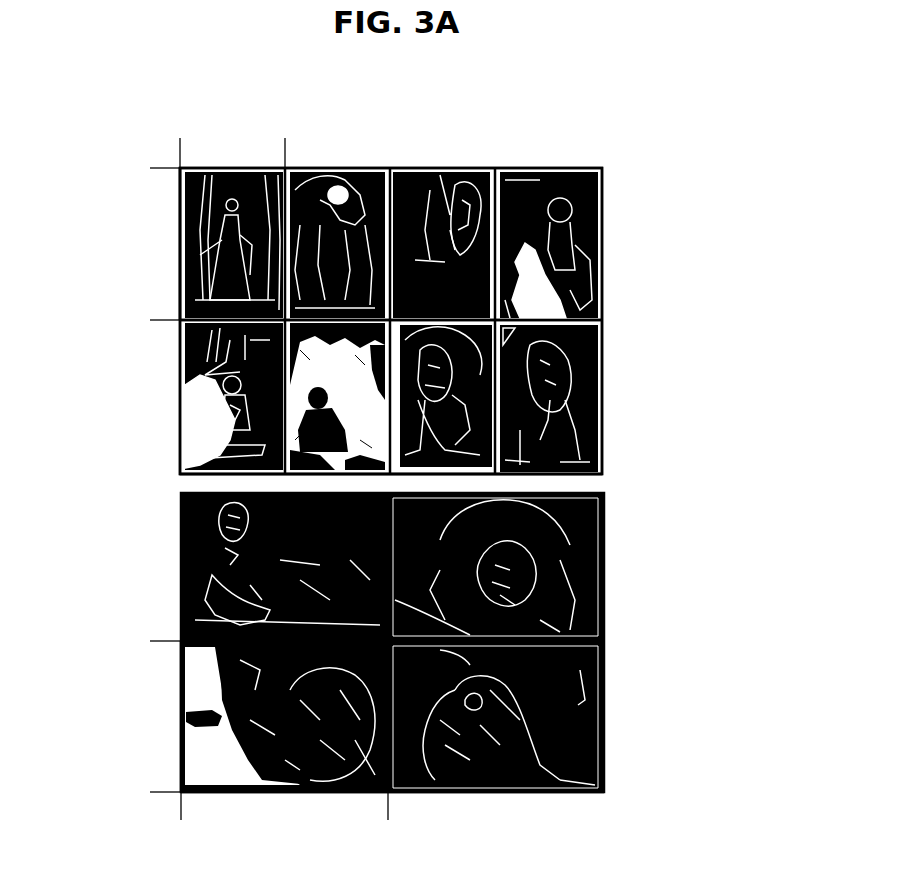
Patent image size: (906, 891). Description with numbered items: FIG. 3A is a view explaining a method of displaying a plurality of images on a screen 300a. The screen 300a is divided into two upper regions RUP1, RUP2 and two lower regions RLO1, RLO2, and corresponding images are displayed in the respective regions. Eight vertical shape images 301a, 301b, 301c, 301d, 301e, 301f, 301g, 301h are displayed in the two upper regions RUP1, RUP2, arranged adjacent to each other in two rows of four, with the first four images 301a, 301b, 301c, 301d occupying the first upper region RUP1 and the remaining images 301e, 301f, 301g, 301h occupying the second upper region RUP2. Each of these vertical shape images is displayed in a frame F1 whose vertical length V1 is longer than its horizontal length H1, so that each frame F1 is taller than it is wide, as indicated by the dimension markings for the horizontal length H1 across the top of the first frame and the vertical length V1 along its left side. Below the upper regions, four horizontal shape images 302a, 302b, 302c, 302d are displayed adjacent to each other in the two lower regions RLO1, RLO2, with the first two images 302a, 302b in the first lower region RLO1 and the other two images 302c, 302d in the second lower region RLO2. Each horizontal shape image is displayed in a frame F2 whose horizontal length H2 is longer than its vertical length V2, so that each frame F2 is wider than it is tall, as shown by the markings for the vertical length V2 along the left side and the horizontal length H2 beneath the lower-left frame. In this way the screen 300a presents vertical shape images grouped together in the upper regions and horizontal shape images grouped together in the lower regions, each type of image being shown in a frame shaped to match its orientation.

The screen 300a is at (432, 160).
The vertical shape image 301a is at (272, 168).
The vertical shape image 301b is at (340, 168).
The vertical shape image 301c is at (470, 168).
The vertical shape image 301d is at (543, 168).
The vertical shape image 301e is at (186, 351).
The vertical shape image 301f is at (320, 455).
The vertical shape image 301g is at (470, 345).
The vertical shape image 301h is at (600, 433).
The horizontal shape image 302a is at (183, 610).
The horizontal shape image 302b is at (600, 560).
The horizontal shape image 302c is at (217, 665).
The horizontal shape image 302d is at (600, 710).
The horizontal length H1 is at (285, 150).
The vertical length V1 is at (162, 168).
The horizontal length H2 is at (388, 810).
The vertical length V2 is at (162, 641).
The frame F1 is at (180, 200).
The frame F2 is at (182, 699).
The upper region RUP1 is at (170, 278).
The upper region RUP2 is at (170, 402).
The lower region RLO1 is at (172, 560).
The lower region RLO2 is at (172, 763).